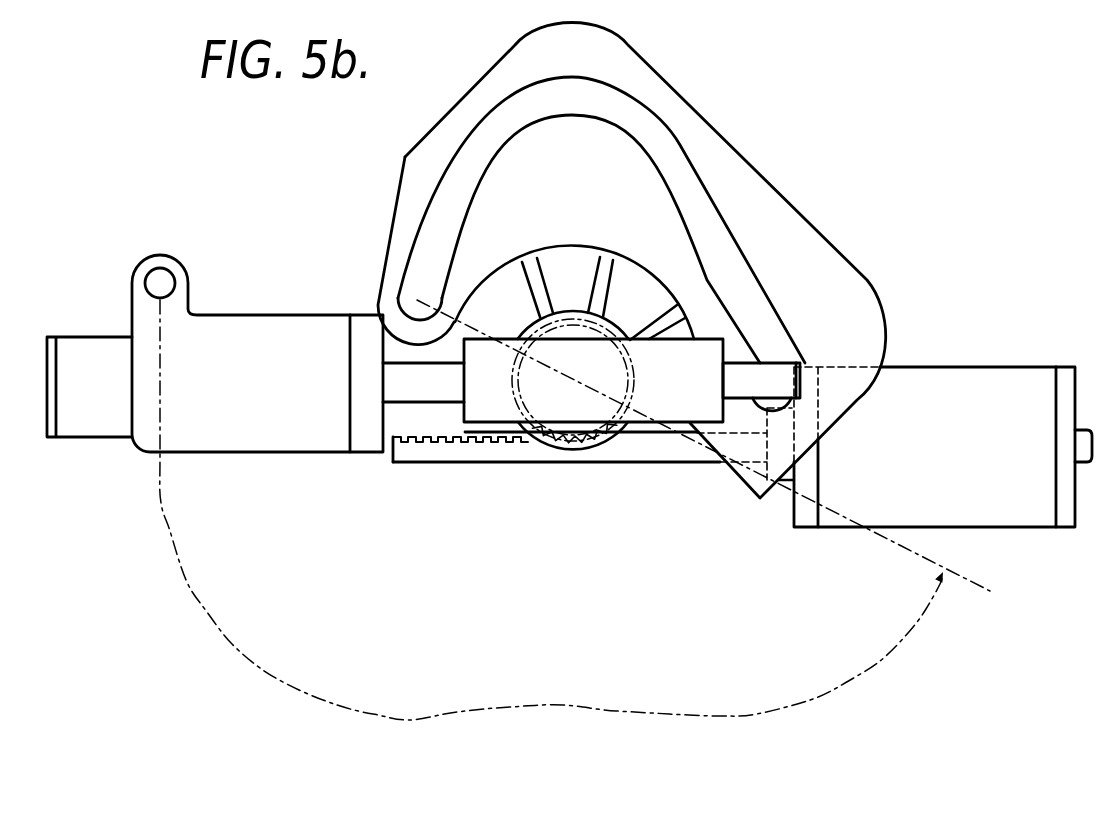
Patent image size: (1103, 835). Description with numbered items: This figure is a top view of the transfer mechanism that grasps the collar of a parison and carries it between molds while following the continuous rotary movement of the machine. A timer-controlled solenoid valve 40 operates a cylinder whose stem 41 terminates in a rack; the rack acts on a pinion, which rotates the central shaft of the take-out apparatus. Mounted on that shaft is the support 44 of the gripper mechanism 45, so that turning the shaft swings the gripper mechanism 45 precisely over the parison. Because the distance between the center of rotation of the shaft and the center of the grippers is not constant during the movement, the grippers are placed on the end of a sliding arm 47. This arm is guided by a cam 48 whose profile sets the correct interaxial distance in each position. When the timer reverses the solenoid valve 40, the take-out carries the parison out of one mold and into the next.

The solenoid valve 40 is at (1003, 368).
The stem 41 is at (748, 383).
The support 44 is at (657, 402).
The gripper mechanism 45 is at (278, 302).
The sliding arm 47 is at (421, 388).
The cam 48 is at (738, 157).